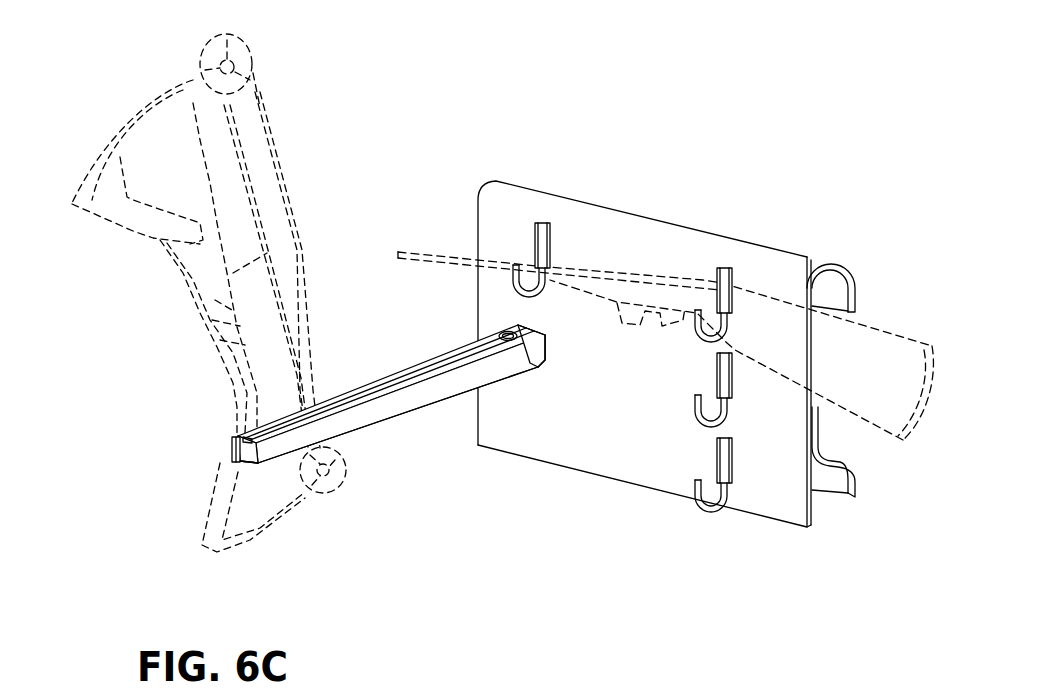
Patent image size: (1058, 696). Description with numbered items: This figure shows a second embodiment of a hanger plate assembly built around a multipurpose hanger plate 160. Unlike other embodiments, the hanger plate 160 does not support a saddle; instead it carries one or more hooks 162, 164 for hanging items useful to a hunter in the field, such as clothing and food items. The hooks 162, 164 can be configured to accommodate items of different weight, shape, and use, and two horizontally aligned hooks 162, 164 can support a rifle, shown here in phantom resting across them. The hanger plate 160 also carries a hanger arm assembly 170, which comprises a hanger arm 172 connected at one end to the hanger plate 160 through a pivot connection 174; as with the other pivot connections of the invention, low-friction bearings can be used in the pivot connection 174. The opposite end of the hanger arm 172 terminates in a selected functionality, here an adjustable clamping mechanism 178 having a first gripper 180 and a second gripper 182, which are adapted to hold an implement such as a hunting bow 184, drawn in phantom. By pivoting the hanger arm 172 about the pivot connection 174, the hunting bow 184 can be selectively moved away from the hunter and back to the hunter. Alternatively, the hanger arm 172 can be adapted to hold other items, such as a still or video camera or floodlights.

The multipurpose hanger plate 160 is at (652, 210).
The hook 162 is at (733, 278).
The hook 164 is at (549, 240).
The hanger arm assembly 170 is at (346, 445).
The hanger arm 172 is at (370, 418).
The pivot connection 174 is at (528, 377).
The adjustable clamping mechanism 178 is at (262, 473).
The first gripper 180 is at (246, 461).
The second gripper 182 is at (240, 437).
The hunting bow 184 is at (128, 240).